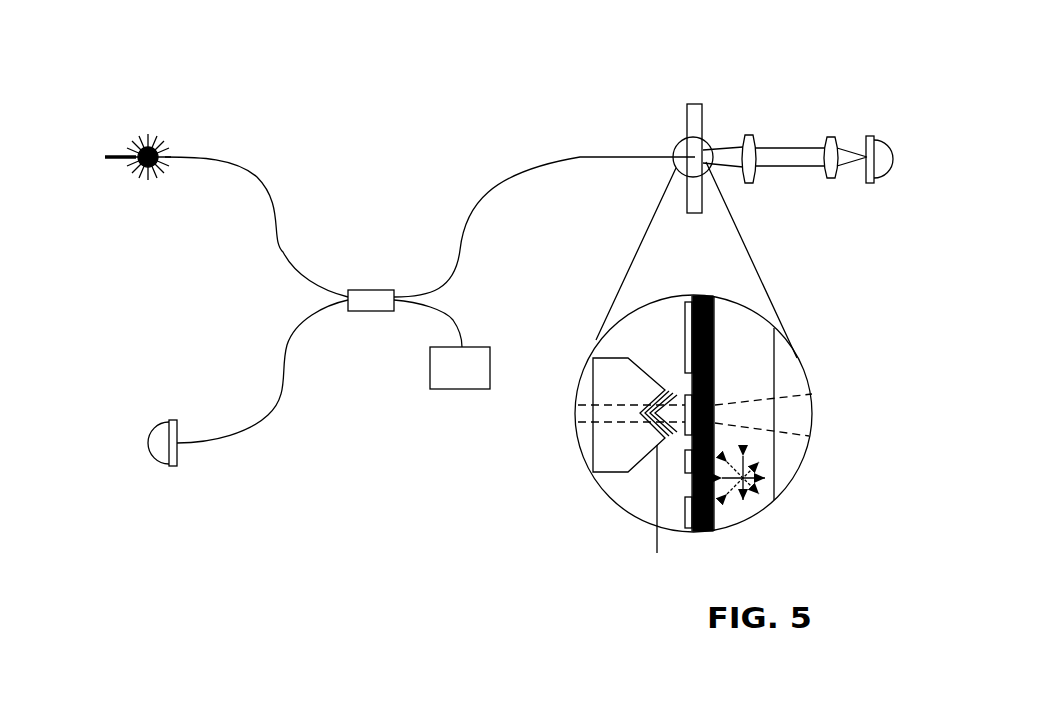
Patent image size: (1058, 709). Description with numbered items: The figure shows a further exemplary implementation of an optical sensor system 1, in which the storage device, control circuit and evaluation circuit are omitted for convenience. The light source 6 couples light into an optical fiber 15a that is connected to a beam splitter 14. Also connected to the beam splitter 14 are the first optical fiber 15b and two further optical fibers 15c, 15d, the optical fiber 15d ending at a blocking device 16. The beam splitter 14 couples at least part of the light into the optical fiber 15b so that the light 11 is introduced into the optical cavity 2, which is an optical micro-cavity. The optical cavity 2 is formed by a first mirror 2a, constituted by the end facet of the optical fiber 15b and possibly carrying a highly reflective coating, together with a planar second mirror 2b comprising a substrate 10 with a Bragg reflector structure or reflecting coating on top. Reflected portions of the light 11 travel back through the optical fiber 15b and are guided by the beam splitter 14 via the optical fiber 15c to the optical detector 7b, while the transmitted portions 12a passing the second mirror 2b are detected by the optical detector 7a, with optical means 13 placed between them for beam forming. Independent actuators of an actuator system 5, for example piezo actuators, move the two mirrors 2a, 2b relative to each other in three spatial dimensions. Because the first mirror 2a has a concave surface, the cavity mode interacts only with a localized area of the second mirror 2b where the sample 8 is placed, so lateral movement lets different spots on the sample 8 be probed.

The optical sensor system 1 is at (404, 541).
The optical cavity 2 is at (681, 144).
The first mirror 2a is at (660, 515).
The second mirror 2b is at (687, 384).
The actuator system 5 is at (763, 486).
The light source 6 is at (157, 128).
The optical detector 7a is at (876, 148).
The optical detector 7b is at (150, 441).
The sample 8 is at (687, 327).
The substrate 10 is at (758, 378).
The light 11 is at (600, 413).
The transmitted portions 12a is at (729, 151).
The optical means 13 is at (752, 192).
The beam splitter 14 is at (373, 296).
The optical fiber 15a is at (259, 175).
The first optical fiber 15b is at (539, 153).
The optical fiber 15c is at (282, 358).
The optical fiber 15d is at (453, 320).
The blocking device 16 is at (442, 365).